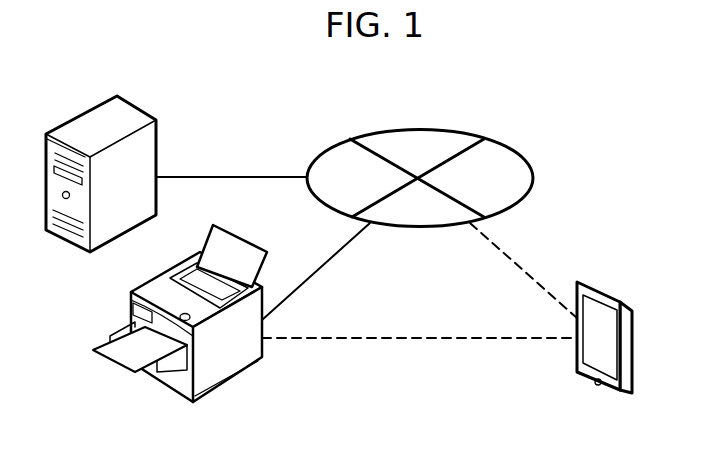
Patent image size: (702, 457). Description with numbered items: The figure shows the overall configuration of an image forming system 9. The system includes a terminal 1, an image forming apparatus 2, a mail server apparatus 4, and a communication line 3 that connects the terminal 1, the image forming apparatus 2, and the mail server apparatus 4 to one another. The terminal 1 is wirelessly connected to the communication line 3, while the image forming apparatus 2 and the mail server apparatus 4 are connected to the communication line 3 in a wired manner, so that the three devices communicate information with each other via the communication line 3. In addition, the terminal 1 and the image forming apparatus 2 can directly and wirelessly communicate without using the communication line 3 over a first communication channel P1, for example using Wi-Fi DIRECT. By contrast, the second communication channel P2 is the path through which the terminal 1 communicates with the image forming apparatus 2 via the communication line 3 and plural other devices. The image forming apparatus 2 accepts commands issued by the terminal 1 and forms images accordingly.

The terminal 1 is at (620, 292).
The image forming apparatus 2 is at (257, 283).
The communication line 3 is at (489, 137).
The mail server apparatus 4 is at (133, 103).
The image forming system 9 is at (611, 150).
The first communication channel P1 is at (428, 338).
The second communication channel P2 is at (327, 264).